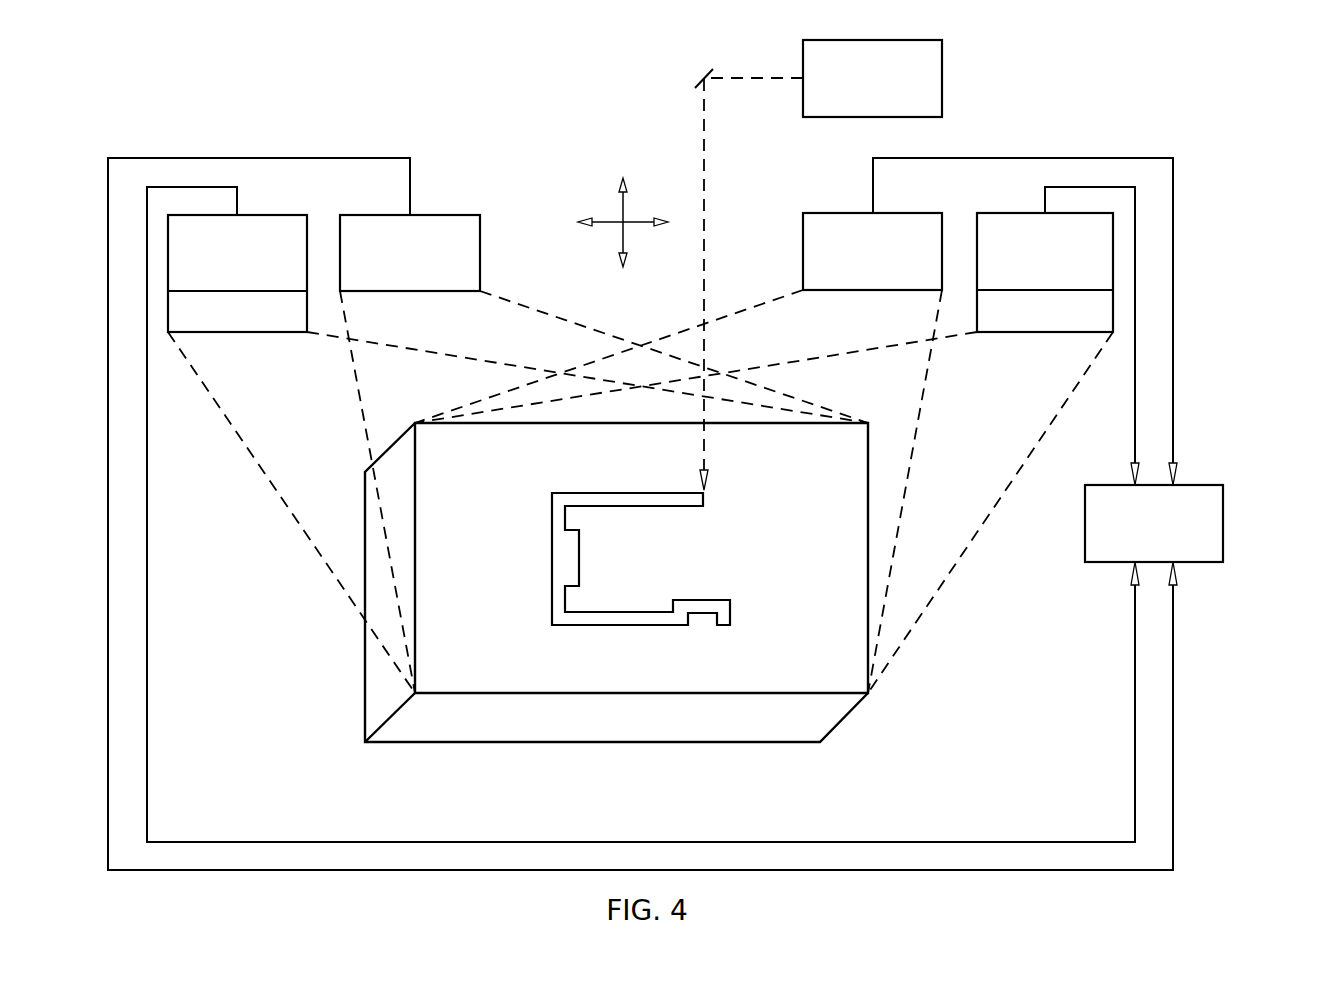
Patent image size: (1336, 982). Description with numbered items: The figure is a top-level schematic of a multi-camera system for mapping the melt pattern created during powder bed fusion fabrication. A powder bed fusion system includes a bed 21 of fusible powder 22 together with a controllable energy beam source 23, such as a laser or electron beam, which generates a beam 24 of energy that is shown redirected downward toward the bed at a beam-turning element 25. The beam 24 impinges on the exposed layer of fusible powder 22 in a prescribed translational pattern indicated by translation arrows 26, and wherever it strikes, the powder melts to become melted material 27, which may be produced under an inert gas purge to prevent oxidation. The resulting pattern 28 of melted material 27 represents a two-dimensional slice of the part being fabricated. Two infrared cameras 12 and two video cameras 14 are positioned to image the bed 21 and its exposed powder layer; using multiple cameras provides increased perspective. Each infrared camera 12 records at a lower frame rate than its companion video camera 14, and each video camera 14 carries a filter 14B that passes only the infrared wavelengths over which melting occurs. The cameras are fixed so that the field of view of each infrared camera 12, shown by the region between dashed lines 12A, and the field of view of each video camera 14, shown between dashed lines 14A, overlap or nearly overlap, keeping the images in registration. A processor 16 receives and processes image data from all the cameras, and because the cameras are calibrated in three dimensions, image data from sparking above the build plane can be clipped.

The infrared camera 12 is at (448, 213).
The dashed lines indicating field of view of infrared camera 12A is at (363, 415).
The video camera 14 is at (265, 213).
The dashed lines indicating field of view of video camera 14A is at (270, 483).
The filter 14B is at (273, 332).
The processor 16 is at (1223, 510).
The bed 21 is at (378, 677).
The fusible powder 22 is at (647, 673).
The energy beam source 23 is at (942, 72).
The beam 24 is at (745, 78).
The beam steering mirror 25 is at (700, 77).
The translation arrows 26 is at (618, 208).
The melted material 27 is at (558, 610).
The pattern 28 is at (522, 478).